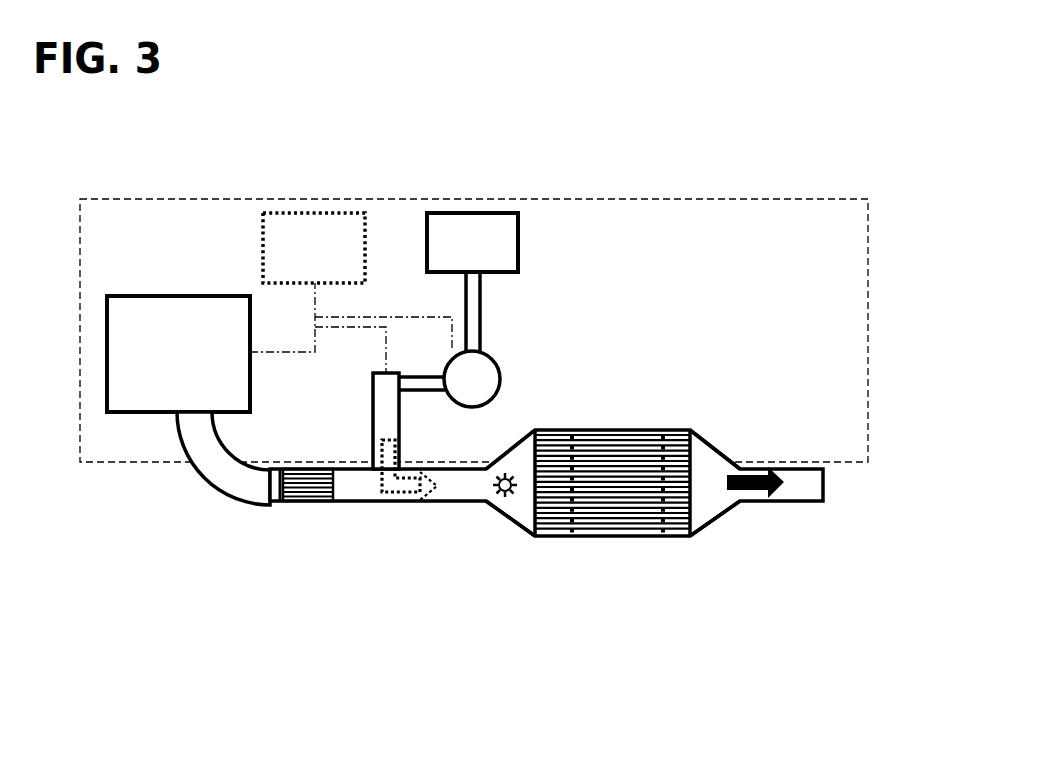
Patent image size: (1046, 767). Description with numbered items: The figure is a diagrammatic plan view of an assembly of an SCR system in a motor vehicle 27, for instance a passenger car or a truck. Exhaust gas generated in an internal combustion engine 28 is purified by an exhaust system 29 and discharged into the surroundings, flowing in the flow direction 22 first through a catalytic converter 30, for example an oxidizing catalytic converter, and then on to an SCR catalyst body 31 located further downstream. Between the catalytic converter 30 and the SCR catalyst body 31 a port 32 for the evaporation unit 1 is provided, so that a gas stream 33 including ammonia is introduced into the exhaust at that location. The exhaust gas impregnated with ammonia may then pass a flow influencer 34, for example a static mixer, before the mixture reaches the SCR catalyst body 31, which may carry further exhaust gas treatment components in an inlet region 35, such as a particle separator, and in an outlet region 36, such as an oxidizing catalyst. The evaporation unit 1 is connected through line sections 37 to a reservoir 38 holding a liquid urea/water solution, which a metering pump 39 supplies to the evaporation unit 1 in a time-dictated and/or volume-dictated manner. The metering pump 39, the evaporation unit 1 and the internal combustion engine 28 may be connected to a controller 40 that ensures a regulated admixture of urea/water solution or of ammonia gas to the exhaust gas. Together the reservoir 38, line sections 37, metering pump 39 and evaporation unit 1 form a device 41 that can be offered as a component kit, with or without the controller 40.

The evaporation unit 1 is at (382, 403).
The flow direction 22 is at (752, 491).
The motor vehicle 27 is at (763, 198).
The internal combustion engine 28 is at (188, 317).
The exhaust system 29 is at (203, 452).
The catalytic converter 30 is at (270, 491).
The SCR catalyst body 31 is at (610, 520).
The port 32 is at (370, 472).
The gas stream 33 is at (398, 503).
The flow influencer 34 is at (503, 500).
The inlet region 35 is at (553, 527).
The outlet region 36 is at (678, 525).
The line sections 37 is at (480, 318).
The reservoir 38 is at (518, 238).
The metering pump 39 is at (500, 380).
The controller 40 is at (320, 230).
The device 41 is at (440, 189).